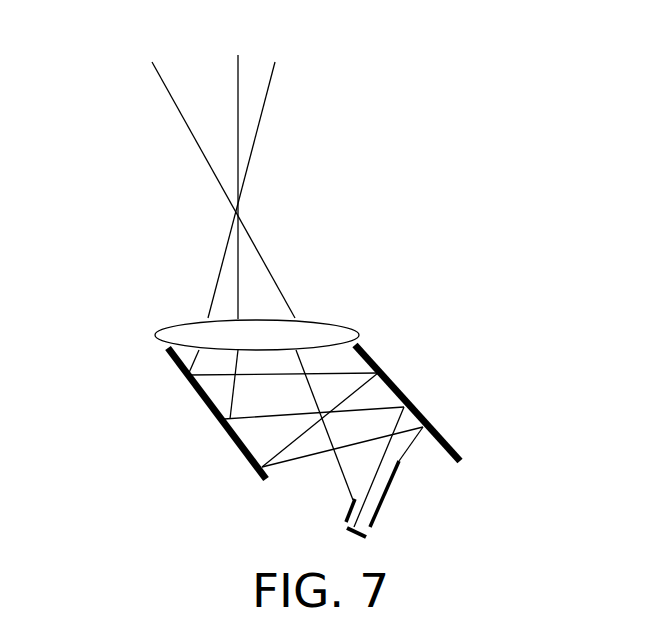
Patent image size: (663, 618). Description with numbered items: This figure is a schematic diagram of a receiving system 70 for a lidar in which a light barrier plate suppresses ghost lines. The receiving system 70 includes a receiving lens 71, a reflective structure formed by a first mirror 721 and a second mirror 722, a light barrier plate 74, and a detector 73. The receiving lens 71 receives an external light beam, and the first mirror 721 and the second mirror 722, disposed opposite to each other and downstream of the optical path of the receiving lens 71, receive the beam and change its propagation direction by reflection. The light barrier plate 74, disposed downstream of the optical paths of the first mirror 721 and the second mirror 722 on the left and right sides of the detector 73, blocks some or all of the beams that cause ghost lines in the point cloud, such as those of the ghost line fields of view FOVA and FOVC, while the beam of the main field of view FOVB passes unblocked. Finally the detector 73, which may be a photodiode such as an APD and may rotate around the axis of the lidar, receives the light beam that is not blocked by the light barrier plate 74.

The receiving system 70 is at (299, 280).
The receiving lens 71 is at (362, 335).
The first mirror 721 is at (252, 465).
The second mirror 722 is at (392, 380).
The detector 73 is at (345, 533).
The light barrier plate 74 is at (352, 509).